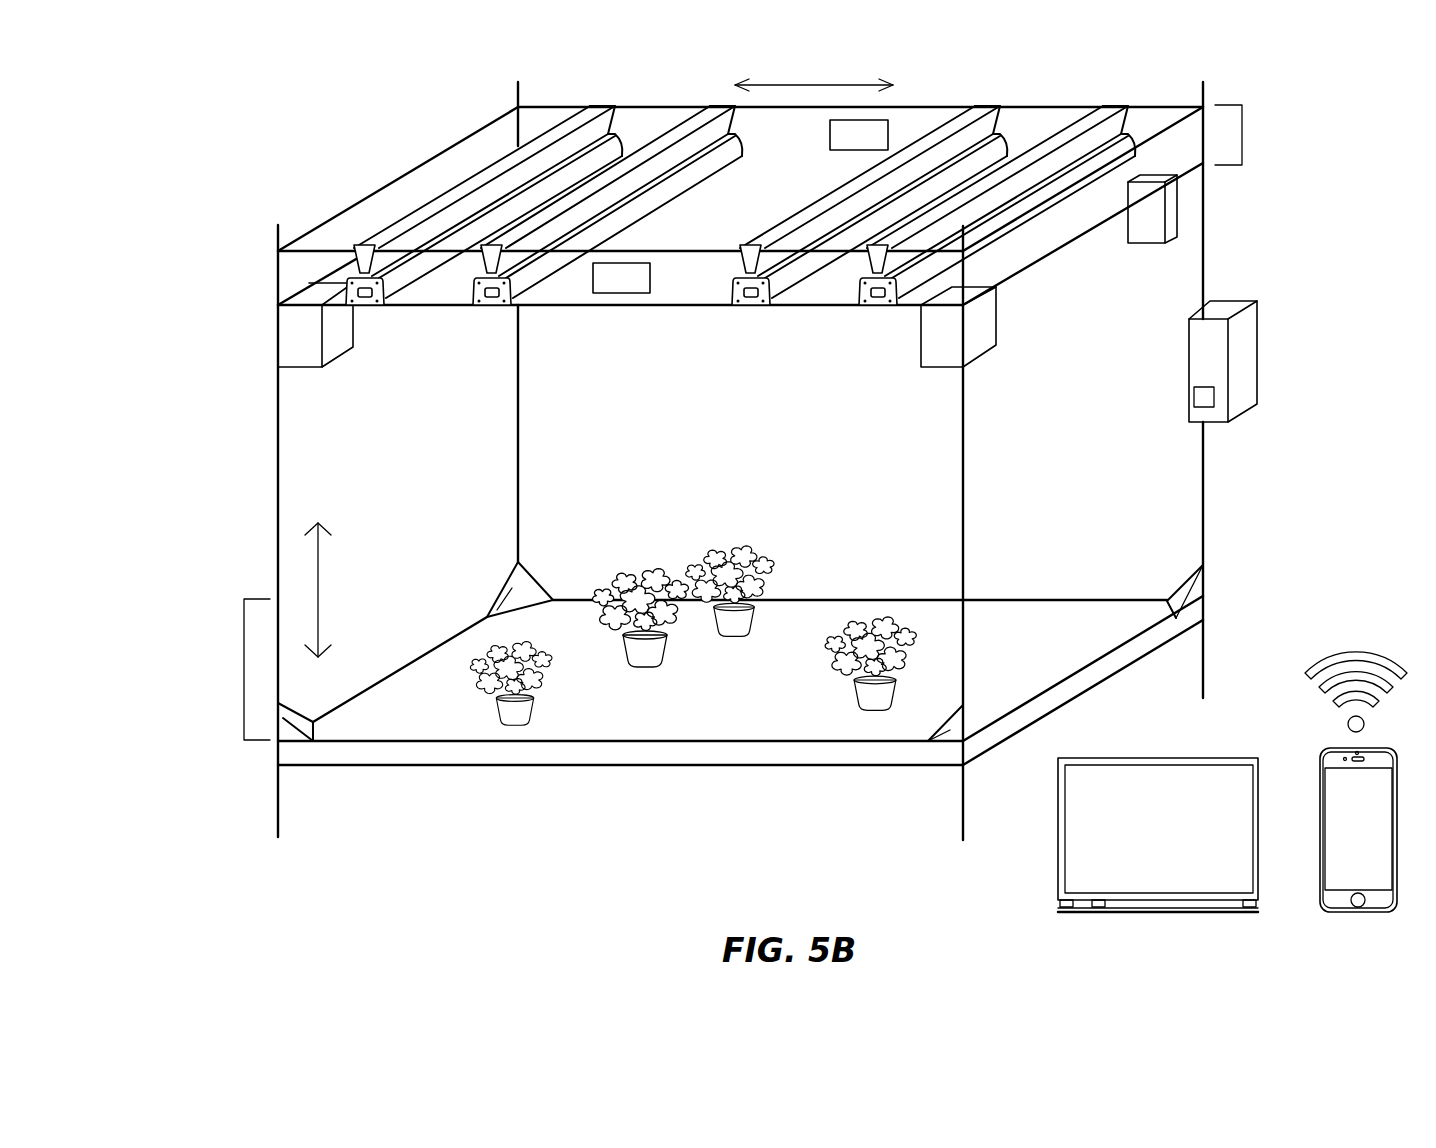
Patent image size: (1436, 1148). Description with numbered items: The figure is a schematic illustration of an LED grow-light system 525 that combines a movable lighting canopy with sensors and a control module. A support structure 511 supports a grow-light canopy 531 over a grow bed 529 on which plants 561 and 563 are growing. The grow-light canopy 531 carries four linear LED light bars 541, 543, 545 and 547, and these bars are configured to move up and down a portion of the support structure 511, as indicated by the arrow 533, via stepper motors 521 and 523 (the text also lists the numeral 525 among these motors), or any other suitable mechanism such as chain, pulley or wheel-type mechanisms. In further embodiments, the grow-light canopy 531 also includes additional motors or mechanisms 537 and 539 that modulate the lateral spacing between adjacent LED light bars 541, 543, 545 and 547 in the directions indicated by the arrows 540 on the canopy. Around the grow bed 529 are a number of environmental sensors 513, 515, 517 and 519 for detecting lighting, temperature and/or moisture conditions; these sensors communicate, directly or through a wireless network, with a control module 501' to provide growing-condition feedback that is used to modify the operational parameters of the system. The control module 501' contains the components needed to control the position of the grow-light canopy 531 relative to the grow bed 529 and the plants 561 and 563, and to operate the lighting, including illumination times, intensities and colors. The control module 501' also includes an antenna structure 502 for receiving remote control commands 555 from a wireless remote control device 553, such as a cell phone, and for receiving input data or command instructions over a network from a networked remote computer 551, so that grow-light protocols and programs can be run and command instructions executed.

The LED grow-light system 525 is at (342, 125).
The arrows 540 is at (822, 85).
The motor or mechanism 539 is at (873, 121).
The grow-light canopy 531 is at (1242, 135).
The stepper motor 523 is at (1190, 197).
The support structure 511 is at (278, 410).
The linear LED light bar 541 is at (362, 306).
The linear LED light bar 543 is at (490, 306).
The motor or mechanism 537 is at (612, 294).
The linear LED light bar 545 is at (750, 306).
The linear LED light bar 547 is at (873, 306).
The stepper motor 521 is at (981, 325).
The control module 501' is at (1293, 358).
The antenna structure 502 is at (1205, 397).
The environmental sensor 515 is at (512, 588).
The environmental sensor 517 is at (1206, 577).
The arrow 533 is at (318, 590).
The remote control commands 555 is at (1363, 651).
The grow bed 529 is at (244, 670).
The environmental sensor 513 is at (290, 728).
The plant 561 is at (515, 728).
The plant 563 is at (645, 666).
The environmental sensor 519 is at (950, 730).
The networked remote computer 551 is at (1078, 908).
The wireless remote control device 553 is at (1337, 917).